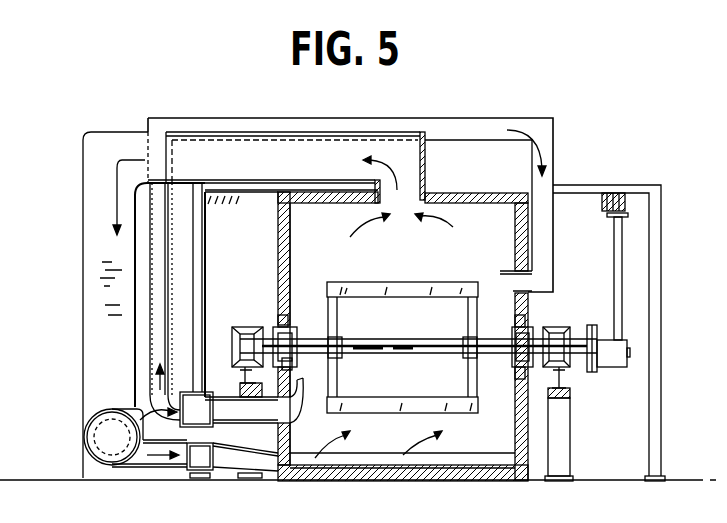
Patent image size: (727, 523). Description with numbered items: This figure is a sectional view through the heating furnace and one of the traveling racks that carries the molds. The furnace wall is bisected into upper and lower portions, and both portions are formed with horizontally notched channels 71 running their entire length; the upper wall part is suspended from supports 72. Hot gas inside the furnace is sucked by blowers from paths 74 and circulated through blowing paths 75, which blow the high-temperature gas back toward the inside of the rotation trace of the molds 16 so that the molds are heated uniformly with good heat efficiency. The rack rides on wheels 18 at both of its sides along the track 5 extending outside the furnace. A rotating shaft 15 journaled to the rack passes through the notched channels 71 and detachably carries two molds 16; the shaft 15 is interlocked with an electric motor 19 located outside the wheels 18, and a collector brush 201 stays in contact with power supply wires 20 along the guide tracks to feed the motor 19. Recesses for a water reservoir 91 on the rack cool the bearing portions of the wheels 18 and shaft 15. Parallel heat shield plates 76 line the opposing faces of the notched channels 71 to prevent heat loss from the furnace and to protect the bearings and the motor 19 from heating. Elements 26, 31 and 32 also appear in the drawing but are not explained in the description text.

The track 5 is at (559, 400).
The rotating shaft 15 is at (586, 340).
The mold 16 is at (408, 402).
The wheel 18 is at (564, 374).
The electric motor 19 is at (612, 355).
The power supply wire 20 is at (610, 193).
The blower 26 is at (83, 427).
The insulated chamber wall 31 is at (520, 439).
The shaft 32 is at (232, 333).
The notched channel 71 is at (274, 328).
The support 72 is at (253, 193).
The path 74 is at (115, 178).
The blowing path 75 is at (486, 316).
The heat shield plate 76 is at (330, 377).
The recess for water reservoir 91 is at (558, 332).
The collector brush 201 is at (628, 207).